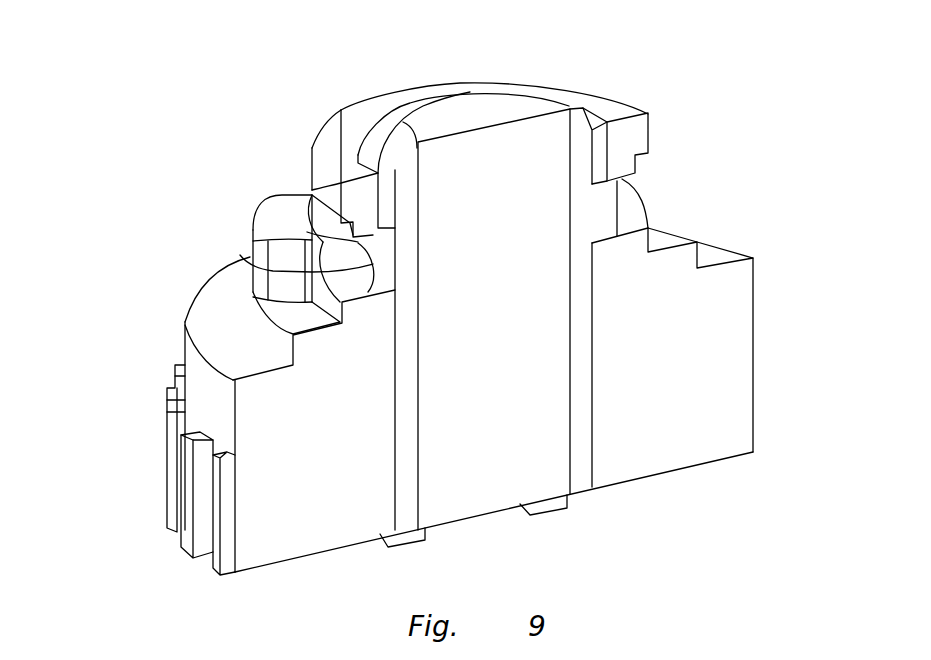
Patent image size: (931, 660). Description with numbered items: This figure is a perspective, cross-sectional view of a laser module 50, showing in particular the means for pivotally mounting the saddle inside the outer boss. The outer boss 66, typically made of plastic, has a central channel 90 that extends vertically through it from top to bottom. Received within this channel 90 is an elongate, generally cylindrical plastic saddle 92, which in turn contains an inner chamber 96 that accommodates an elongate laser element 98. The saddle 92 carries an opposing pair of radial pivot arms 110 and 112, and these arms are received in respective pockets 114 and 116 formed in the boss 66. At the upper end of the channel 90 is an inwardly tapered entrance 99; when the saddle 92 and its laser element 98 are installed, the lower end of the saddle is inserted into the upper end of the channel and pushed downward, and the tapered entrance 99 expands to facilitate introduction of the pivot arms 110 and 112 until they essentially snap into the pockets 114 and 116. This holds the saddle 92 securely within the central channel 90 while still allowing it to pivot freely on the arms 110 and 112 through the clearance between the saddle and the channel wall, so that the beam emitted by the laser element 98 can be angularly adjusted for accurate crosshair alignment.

The laser module 50 is at (137, 515).
The outer boss 66 is at (186, 302).
The central channel 90 is at (363, 135).
The saddle 92 is at (421, 200).
The inner chamber 96 is at (567, 380).
The laser element 98 is at (494, 91).
The inwardly tapered entrance 99 is at (623, 147).
The radial pivot arm 110 is at (252, 260).
The radial pivot arm 112 is at (597, 212).
The pocket 114 is at (363, 290).
The pocket 116 is at (618, 238).